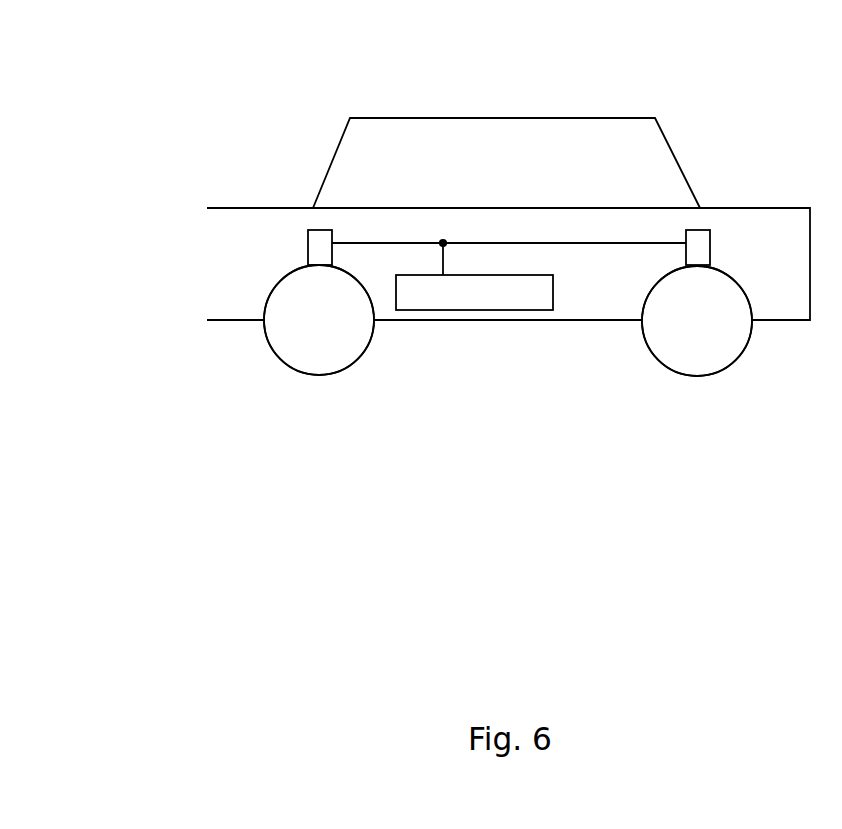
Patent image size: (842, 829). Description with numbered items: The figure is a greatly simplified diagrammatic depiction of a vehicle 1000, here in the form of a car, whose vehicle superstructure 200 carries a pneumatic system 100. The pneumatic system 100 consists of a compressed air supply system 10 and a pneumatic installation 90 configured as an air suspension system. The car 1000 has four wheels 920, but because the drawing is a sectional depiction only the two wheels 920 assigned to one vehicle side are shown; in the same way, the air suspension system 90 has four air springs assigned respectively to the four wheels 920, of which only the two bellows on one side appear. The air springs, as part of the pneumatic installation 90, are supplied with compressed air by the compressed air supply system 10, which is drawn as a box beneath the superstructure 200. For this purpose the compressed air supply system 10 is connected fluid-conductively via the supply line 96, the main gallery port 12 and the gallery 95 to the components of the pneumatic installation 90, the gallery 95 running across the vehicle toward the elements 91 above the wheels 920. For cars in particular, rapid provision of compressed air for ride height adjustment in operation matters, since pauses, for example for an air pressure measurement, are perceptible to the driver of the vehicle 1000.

The vehicle 1000 is at (666, 55).
The pneumatic system 100 is at (417, 140).
The pneumatic installation 90 is at (253, 299).
The wheels 920 is at (316, 388).
The sensors 91 is at (318, 228).
The gallery 95 is at (631, 243).
The main gallery port 12 is at (443, 243).
The supply line 96 is at (443, 268).
The compressed air supply system 10 is at (403, 302).
The vehicle superstructure 200 is at (614, 318).